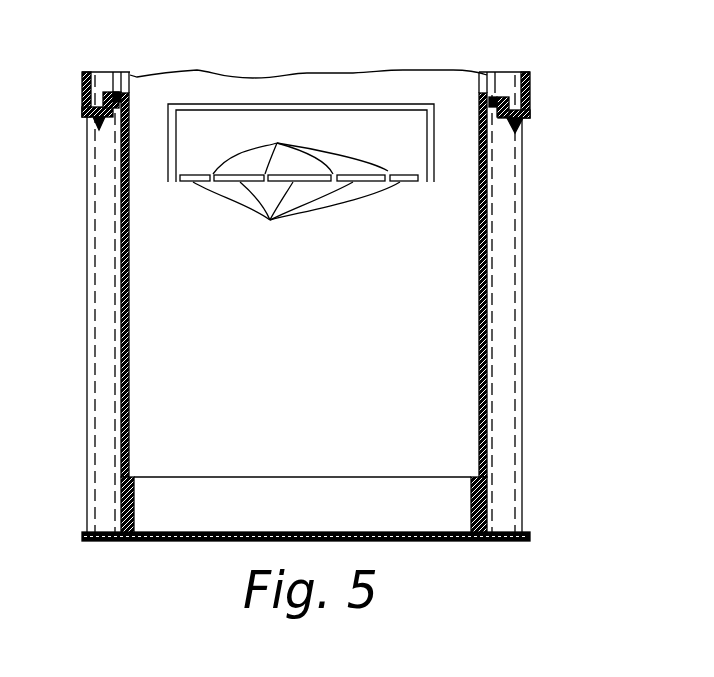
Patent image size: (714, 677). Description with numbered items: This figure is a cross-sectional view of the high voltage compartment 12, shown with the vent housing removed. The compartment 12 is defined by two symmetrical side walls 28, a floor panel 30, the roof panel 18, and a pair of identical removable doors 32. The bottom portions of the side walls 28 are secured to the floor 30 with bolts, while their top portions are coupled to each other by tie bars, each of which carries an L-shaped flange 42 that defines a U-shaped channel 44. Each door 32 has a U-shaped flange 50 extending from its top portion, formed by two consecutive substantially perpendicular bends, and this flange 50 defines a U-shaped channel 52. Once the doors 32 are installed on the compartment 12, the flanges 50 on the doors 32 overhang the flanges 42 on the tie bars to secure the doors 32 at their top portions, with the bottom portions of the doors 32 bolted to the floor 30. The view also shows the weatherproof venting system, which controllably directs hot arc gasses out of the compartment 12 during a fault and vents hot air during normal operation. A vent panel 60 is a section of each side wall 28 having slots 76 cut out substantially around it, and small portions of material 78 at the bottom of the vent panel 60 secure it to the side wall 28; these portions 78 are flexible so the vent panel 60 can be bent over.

The high voltage compartment 12 is at (597, 428).
The roof panel 18 is at (82, 82).
The side walls 28 is at (440, 307).
The floor panel 30 is at (325, 516).
The removable doors 32 is at (128, 343).
The L-shaped flange 42 is at (92, 132).
The U-shaped channel 44 is at (82, 112).
The U-shaped flange 50 is at (108, 92).
The U-shaped channel 52 is at (128, 92).
The vent panel 60 is at (365, 128).
The slots 76 is at (187, 105).
The small portions of material 78 is at (296, 168).